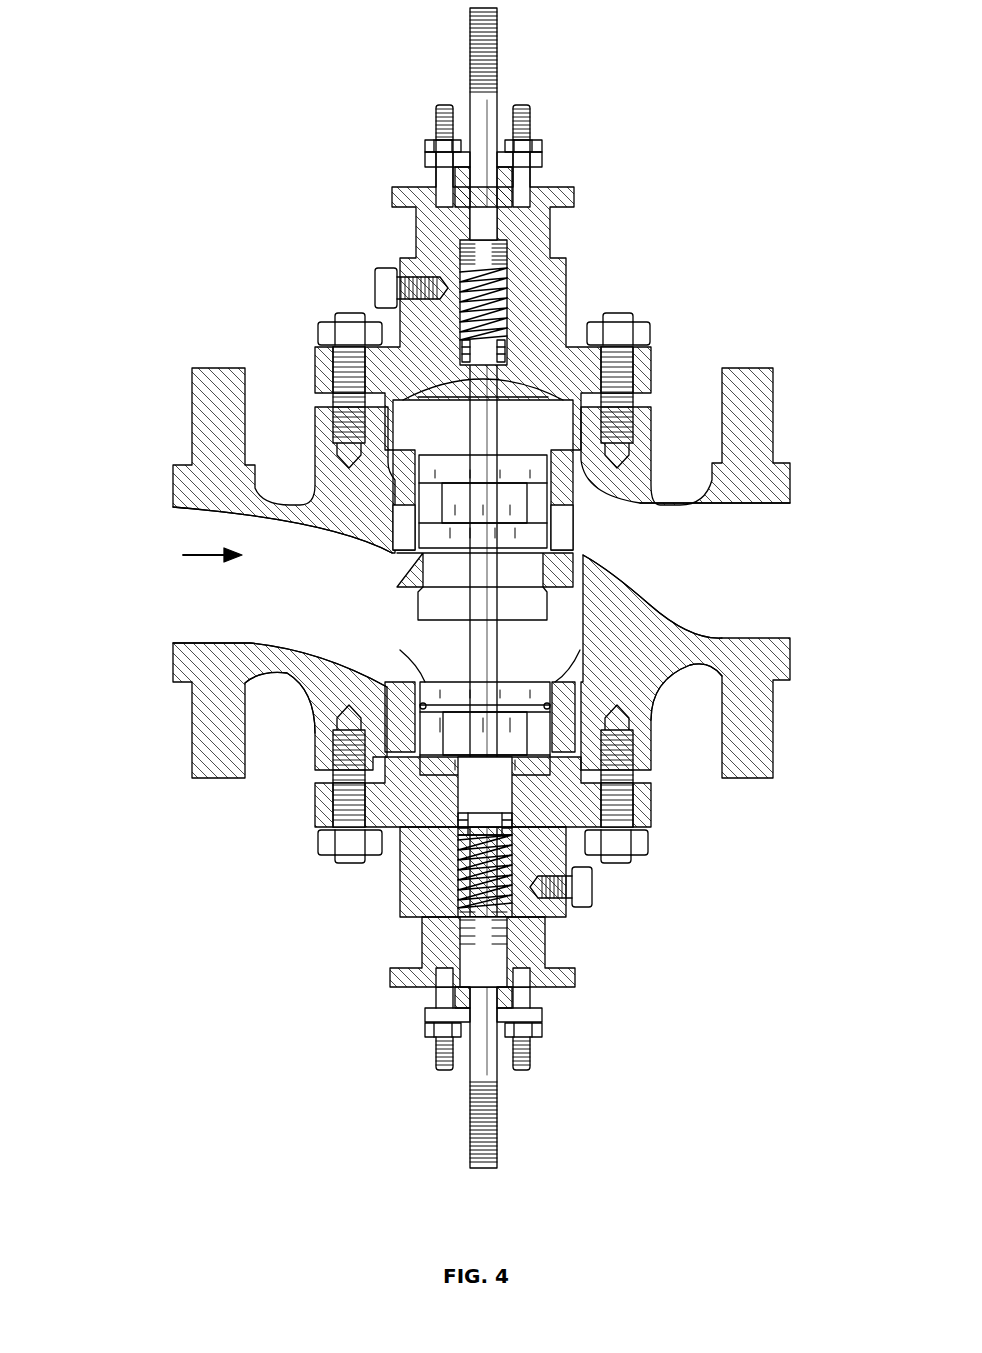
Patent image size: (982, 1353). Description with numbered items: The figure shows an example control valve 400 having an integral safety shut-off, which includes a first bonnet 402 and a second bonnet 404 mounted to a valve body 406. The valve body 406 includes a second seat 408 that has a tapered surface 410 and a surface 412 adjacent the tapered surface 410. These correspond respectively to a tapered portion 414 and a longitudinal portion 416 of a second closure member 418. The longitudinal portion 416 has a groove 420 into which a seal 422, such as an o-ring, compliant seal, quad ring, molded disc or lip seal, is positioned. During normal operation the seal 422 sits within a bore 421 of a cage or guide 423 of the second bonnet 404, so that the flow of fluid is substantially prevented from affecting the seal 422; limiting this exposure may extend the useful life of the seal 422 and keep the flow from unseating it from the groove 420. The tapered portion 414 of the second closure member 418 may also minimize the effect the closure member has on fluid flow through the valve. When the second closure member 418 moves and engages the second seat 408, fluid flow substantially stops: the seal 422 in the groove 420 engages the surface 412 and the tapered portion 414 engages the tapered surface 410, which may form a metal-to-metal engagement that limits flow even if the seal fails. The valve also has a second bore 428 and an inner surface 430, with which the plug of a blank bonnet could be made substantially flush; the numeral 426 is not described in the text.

The control valve 400 is at (186, 40).
The first bonnet 402 is at (563, 258).
The second bonnet 404 is at (652, 803).
The valve body 406 is at (750, 368).
The second seat 408 is at (395, 612).
The tapered surface 410 is at (573, 590).
The surface 412 is at (565, 600).
The tapered portion 414 is at (417, 613).
The longitudinal portion 416 is at (640, 722).
The second closure member 418 is at (408, 880).
The groove 420 is at (525, 704).
The bore 421 is at (460, 775).
The seal 422 is at (420, 700).
The cage or guide 423 is at (365, 860).
The lower bonnet neck 426 is at (398, 912).
The second bore 428 is at (415, 690).
The inner surface 430 is at (400, 660).